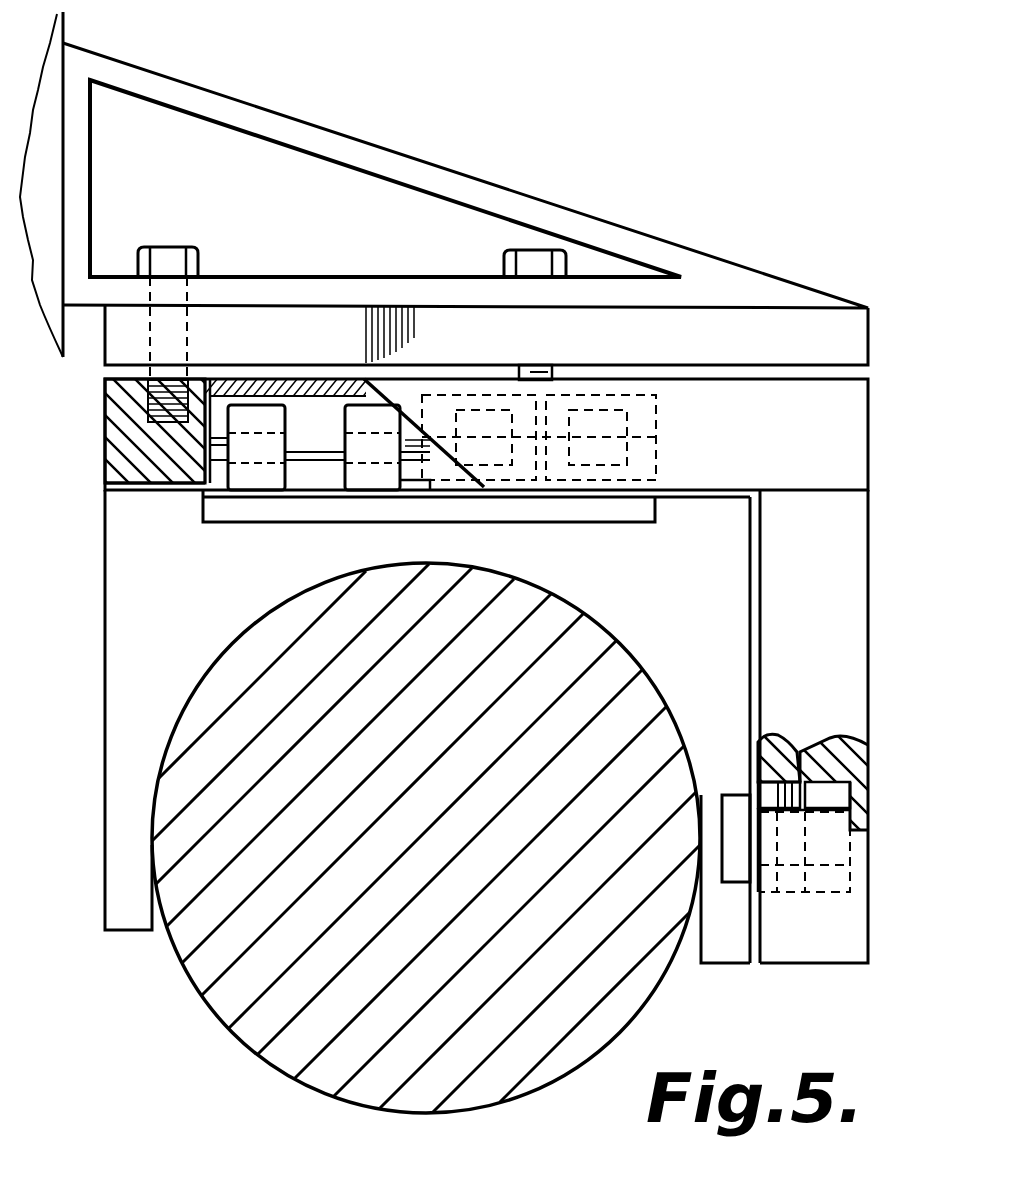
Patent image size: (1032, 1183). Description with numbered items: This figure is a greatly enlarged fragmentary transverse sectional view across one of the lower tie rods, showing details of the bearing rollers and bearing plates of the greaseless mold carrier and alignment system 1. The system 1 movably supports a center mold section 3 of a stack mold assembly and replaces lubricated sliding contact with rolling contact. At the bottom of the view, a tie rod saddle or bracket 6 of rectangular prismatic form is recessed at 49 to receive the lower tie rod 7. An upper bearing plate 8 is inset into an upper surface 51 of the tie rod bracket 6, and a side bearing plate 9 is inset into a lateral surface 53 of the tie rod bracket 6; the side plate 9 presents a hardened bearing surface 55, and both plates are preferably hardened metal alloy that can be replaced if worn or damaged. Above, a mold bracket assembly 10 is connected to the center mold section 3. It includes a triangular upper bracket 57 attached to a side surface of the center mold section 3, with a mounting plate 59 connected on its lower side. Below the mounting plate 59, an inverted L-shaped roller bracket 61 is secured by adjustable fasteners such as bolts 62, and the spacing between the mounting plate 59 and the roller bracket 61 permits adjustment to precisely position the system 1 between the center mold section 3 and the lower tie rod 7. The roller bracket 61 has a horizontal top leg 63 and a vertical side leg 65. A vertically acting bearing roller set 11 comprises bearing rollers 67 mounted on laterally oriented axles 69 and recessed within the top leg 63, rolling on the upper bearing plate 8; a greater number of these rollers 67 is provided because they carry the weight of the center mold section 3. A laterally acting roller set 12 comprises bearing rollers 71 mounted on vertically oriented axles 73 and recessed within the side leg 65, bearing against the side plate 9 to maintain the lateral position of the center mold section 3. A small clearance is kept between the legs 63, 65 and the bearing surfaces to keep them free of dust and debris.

The greaseless mold carrier and alignment system 1 is at (783, 148).
The center mold section 3 is at (45, 322).
The tie rod saddle or bracket 6 is at (105, 567).
The tie rod 7 is at (223, 998).
The upper bearing plate 8 is at (668, 503).
The side bearing plate 9 is at (740, 798).
The mold bracket assembly 10 is at (752, 275).
The vertically acting bearing roller set 11 is at (262, 410).
The laterally acting bearing roller set 12 is at (828, 806).
The recess 49 is at (195, 714).
The upper surface 51 is at (110, 474).
The lateral surface 53 is at (758, 530).
The bearing surface 55 is at (757, 830).
The triangular upper bracket 57 is at (290, 135).
The mounting plate 59 is at (858, 333).
The inverted L-shaped roller bracket 61 is at (850, 407).
The bolts 62 is at (165, 258).
The horizontal top leg 63 is at (116, 414).
The vertical side leg 65 is at (840, 592).
The bearing rollers 67 is at (362, 482).
The laterally oriented axles 69 is at (410, 485).
The bearing rollers 71 is at (828, 840).
The vertically oriented axles 73 is at (795, 755).